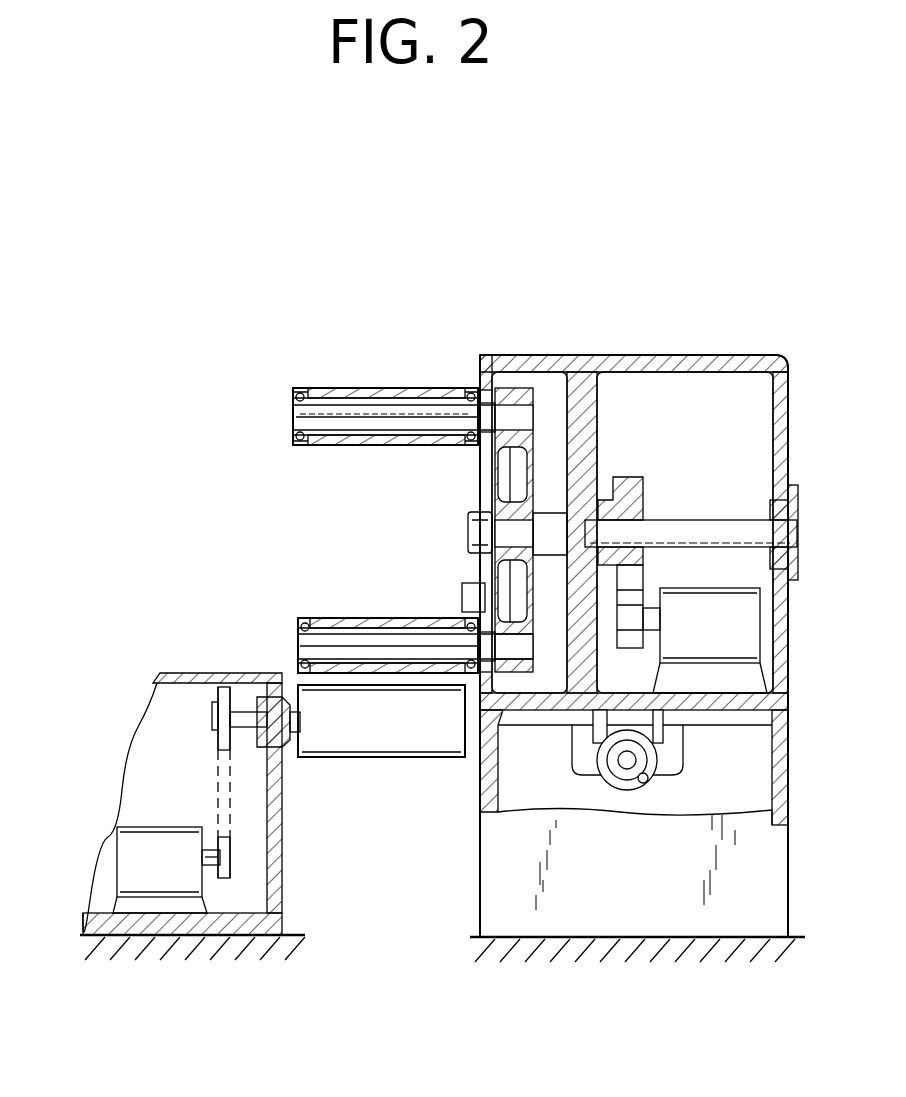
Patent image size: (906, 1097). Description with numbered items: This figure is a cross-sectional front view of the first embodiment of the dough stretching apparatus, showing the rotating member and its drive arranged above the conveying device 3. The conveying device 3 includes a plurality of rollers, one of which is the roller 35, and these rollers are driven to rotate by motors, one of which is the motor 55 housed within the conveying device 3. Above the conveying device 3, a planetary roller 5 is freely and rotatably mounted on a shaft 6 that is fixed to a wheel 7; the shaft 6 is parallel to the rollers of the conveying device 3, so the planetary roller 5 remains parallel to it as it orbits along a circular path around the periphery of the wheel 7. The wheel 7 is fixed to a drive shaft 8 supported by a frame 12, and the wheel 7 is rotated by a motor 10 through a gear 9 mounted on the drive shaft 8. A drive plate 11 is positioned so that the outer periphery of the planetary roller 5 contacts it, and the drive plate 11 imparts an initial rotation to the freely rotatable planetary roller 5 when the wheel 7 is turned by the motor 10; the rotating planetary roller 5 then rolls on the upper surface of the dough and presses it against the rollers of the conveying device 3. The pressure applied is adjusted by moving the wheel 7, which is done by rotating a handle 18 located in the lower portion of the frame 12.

The conveying device 3 is at (158, 712).
The planetary roller 5 is at (363, 388).
The shaft 6 is at (385, 413).
The wheel 7 is at (502, 477).
The drive shaft 8 is at (712, 520).
The gear 9 is at (642, 477).
The motor 10 is at (707, 587).
The drive plate 11 is at (462, 595).
The frame 12 is at (665, 357).
The handle 18 is at (625, 795).
The roller 35 is at (393, 757).
The motor 55 is at (125, 852).